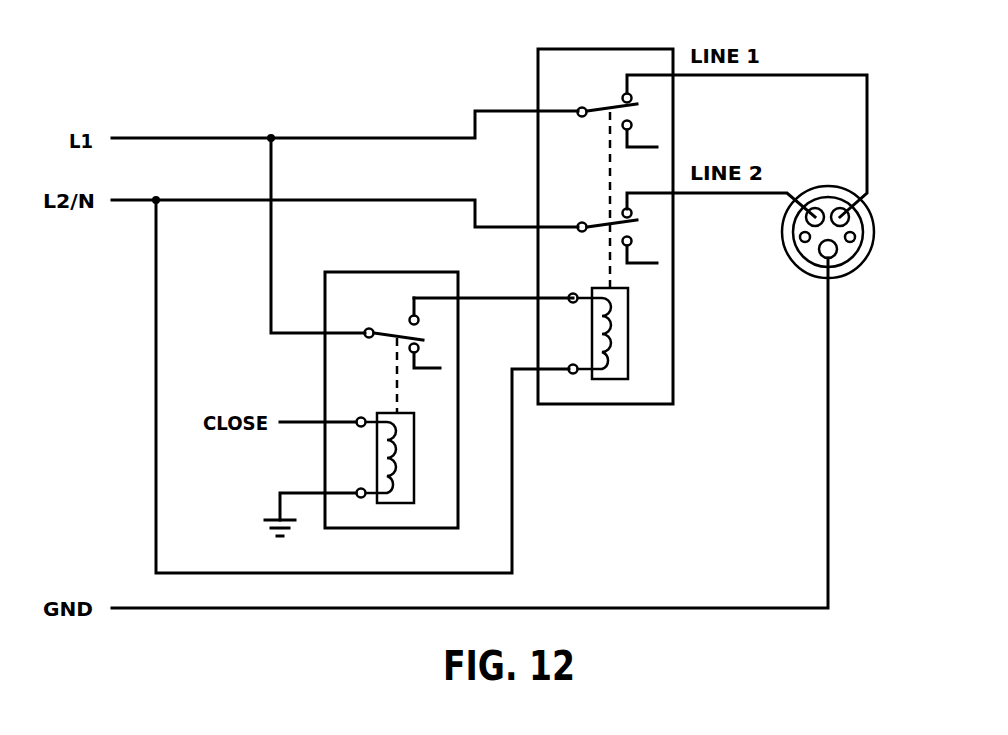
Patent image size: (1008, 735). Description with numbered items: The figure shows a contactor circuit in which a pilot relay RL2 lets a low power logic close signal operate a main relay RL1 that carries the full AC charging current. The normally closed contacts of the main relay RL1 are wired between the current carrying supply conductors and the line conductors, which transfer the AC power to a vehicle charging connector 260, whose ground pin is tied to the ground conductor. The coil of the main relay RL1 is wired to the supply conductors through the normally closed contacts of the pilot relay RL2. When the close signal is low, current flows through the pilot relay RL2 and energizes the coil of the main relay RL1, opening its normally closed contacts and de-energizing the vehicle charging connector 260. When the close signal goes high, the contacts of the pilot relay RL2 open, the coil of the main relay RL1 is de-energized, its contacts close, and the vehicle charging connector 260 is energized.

The vehicle charging connector 260 is at (829, 186).
The main relay RL1 is at (702, 209).
The pilot relay RL2 is at (391, 382).